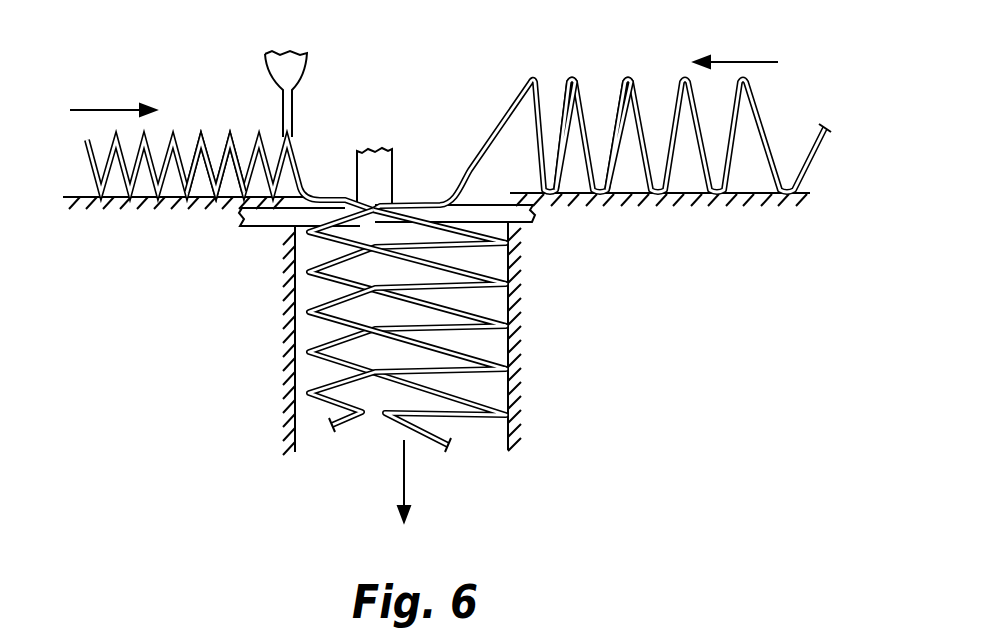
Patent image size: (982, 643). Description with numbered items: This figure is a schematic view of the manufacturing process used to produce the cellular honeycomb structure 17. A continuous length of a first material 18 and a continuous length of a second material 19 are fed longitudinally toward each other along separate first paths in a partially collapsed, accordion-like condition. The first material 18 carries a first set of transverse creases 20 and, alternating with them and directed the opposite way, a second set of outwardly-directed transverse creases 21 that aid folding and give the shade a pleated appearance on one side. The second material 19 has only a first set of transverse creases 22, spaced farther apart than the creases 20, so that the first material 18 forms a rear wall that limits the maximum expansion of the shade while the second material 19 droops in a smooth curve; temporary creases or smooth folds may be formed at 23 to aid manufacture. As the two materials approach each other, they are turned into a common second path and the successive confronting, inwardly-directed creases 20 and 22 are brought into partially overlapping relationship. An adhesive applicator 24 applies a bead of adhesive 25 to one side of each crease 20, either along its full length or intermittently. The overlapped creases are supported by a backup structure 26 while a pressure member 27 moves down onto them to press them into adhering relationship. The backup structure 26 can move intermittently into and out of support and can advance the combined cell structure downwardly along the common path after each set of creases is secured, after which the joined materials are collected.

The honeycomb structure 17 is at (302, 330).
The first material 18 is at (85, 158).
The second material 19 is at (818, 153).
The first set of transverse creases 20 is at (178, 207).
The second set of transverse creases 21 is at (230, 137).
The first set of transverse creases 22 is at (628, 77).
The temporary creases or smooth folds 23 is at (657, 198).
The adhesive applicator 24 is at (291, 107).
The bead of adhesive 25 is at (287, 137).
The backup structure 26 is at (270, 220).
The pressure member 27 is at (371, 173).